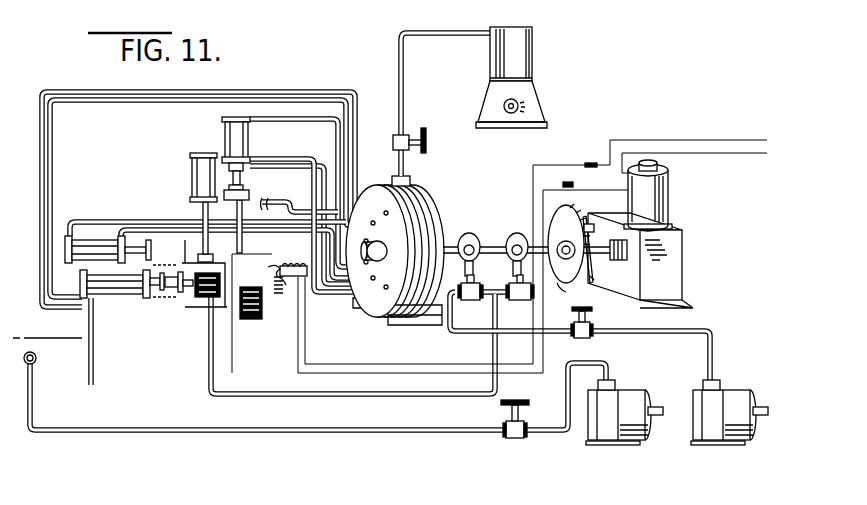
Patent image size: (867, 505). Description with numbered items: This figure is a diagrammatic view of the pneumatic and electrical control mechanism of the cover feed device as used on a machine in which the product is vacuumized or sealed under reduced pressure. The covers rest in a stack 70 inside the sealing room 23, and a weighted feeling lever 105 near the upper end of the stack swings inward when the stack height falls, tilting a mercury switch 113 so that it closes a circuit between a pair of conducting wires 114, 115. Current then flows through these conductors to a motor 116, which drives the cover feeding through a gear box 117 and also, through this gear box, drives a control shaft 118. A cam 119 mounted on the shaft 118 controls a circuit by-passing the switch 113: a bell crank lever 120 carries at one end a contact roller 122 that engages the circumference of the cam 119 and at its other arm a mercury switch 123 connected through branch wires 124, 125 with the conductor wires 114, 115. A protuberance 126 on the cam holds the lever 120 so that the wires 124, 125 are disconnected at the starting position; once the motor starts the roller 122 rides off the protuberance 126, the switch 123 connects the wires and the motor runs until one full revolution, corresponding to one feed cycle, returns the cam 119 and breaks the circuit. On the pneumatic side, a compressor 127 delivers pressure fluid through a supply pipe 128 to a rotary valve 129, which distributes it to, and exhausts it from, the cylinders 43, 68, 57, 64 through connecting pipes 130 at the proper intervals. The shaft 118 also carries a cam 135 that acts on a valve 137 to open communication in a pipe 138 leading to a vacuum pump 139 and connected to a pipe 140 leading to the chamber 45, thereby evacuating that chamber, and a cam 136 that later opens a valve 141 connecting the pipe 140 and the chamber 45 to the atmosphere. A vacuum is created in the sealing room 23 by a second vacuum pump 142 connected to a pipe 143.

The sealing room 23 is at (50, 348).
The cylinder 43 is at (90, 244).
The chamber 45 is at (190, 300).
The cylinder 57 is at (191, 178).
The cylinder 64 is at (227, 133).
The cylinder 68 is at (123, 298).
The stack 70 is at (262, 312).
The feeling lever 105 is at (267, 271).
The mercury switch 113 is at (291, 265).
The conducting wire 114 is at (297, 336).
The conducting wire 115 is at (309, 338).
The motor 116 is at (668, 198).
The gear box 117 is at (668, 245).
The control shaft 118 is at (601, 259).
The cam 119 is at (557, 285).
The bell crank lever 120 is at (591, 279).
The contact roller 122 is at (591, 233).
The mercury switch 123 is at (566, 244).
The branch wire 124 is at (561, 219).
The branch wire 125 is at (572, 187).
The protuberance 126 is at (592, 224).
The compressor 127 is at (535, 71).
The supply pipe 128 is at (404, 104).
The rotary valve 129 is at (423, 194).
The connecting pipes 130 is at (310, 178).
The cam 135 is at (467, 233).
The cam 136 is at (513, 233).
The valve 137 is at (474, 293).
The pipe 138 is at (451, 334).
The vacuum pump 139 is at (731, 388).
The pipe 140 is at (214, 343).
The valve 141 is at (519, 301).
The vacuum pump 142 is at (589, 433).
The pipe 143 is at (422, 433).